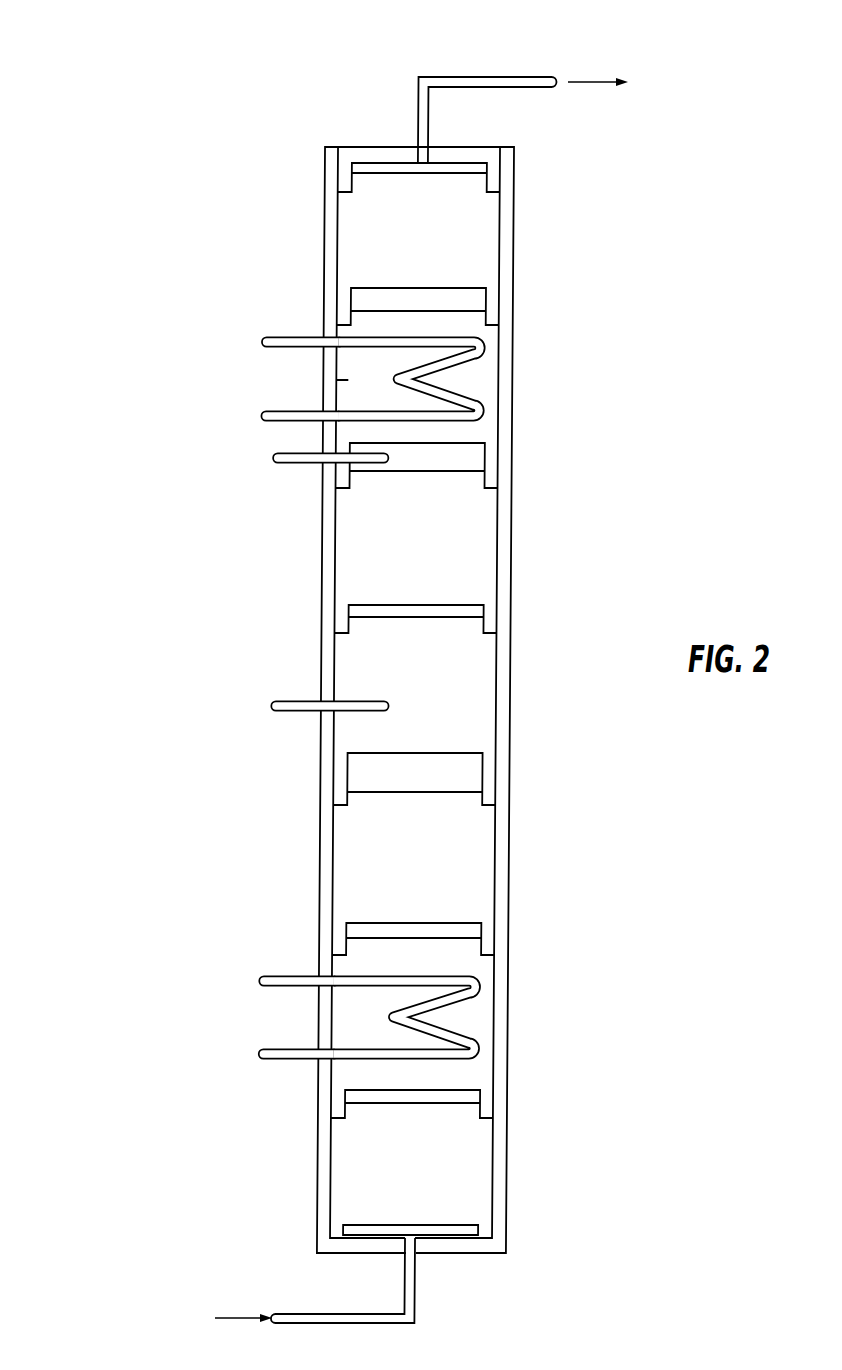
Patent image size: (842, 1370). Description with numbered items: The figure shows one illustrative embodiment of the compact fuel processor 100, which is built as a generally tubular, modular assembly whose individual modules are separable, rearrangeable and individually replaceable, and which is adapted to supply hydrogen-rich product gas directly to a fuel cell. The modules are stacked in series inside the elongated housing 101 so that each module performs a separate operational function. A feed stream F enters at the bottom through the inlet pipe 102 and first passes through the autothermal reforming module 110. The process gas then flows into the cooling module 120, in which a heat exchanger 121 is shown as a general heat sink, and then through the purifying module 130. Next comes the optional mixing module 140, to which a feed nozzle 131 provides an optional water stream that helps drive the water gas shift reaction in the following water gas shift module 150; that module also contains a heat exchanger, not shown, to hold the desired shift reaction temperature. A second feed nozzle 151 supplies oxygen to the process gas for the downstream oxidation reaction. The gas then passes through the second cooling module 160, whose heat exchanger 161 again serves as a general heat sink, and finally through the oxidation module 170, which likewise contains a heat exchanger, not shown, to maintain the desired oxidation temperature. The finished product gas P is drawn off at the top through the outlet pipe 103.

The fuel processor 100 is at (170, 117).
The column shell 101 is at (343, 143).
The inlet pipe 102 is at (308, 1312).
The outlet pipe 103 is at (473, 75).
The autothermal reforming module 110 is at (436, 1191).
The cooling module 120 is at (480, 1075).
The heat exchanger 121 is at (280, 973).
The purifying module 130 is at (439, 876).
The feed nozzle 131 is at (282, 700).
The mixing module 140 is at (441, 680).
The water gas shift module 150 is at (442, 553).
The feed nozzle 151 is at (273, 458).
The cooling module 160 is at (483, 390).
The heat exchanger 161 is at (287, 337).
The oxidation module 170 is at (445, 243).